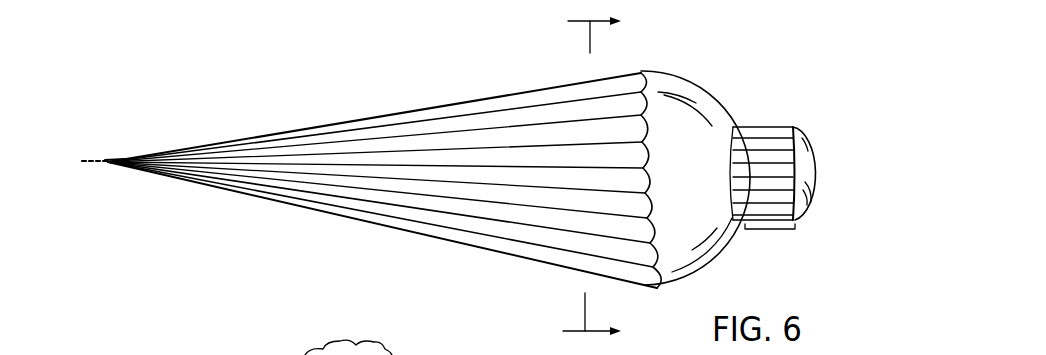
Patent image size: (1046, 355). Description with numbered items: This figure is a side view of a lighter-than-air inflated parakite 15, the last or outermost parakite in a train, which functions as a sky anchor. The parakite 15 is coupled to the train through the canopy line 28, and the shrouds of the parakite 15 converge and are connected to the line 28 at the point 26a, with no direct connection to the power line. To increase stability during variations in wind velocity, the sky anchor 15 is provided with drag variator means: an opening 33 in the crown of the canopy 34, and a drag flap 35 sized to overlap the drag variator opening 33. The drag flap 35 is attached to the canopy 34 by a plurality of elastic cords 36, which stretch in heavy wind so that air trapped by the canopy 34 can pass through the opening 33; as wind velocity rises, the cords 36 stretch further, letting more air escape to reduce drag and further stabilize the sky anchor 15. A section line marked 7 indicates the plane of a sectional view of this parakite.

The section line 7- 7 is at (584, 177).
The parakite 15 is at (509, 84).
The shroud connection point 26a is at (111, 159).
The canopy line 28 is at (88, 160).
The drag variator opening 33 is at (733, 127).
The canopy 34 is at (687, 79).
The drag flap 35 is at (815, 178).
The elastic cords 36 is at (773, 229).